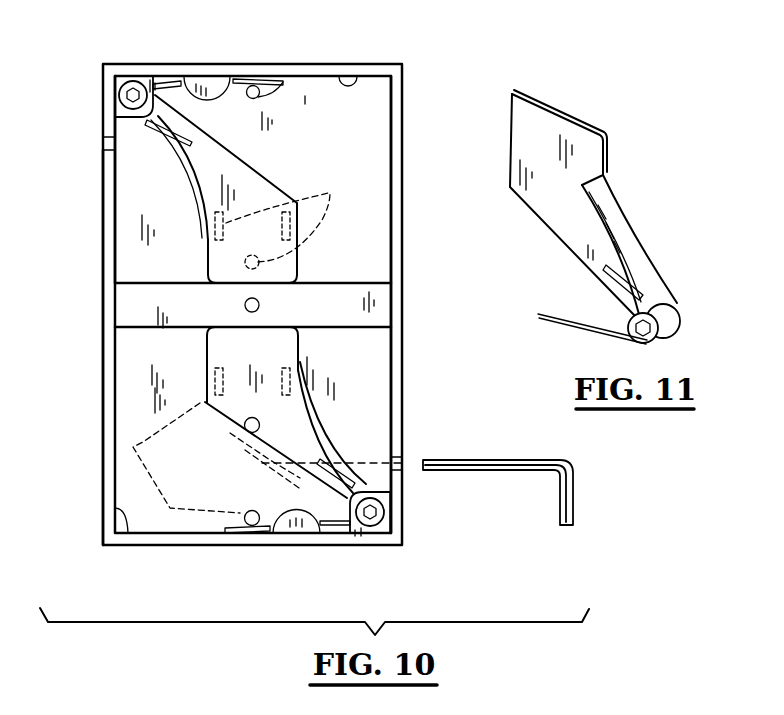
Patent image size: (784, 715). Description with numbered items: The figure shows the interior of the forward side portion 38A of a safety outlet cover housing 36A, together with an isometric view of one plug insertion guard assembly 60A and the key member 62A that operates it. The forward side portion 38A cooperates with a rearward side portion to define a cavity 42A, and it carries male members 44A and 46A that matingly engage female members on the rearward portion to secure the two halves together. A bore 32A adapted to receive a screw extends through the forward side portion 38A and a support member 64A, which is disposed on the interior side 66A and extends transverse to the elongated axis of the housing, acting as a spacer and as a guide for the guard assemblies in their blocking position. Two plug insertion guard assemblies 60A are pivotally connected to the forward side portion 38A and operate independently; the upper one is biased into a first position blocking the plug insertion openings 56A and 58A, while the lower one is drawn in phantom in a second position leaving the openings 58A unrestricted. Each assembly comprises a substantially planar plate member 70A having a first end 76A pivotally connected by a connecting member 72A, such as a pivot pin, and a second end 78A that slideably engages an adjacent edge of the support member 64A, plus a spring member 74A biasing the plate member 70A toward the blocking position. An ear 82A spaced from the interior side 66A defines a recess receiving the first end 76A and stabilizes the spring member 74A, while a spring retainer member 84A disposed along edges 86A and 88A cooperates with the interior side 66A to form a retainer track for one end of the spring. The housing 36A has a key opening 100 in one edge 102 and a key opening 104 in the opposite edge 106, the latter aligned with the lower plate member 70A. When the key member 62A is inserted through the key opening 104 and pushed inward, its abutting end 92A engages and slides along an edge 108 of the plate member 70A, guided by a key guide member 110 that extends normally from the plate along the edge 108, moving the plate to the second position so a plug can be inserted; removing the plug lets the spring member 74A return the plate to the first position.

In FIG. 10, the bore 32A is at (259, 305).
In FIG. 10, the housing 36A is at (425, 57).
In FIG. 10, the forward side portion 38A is at (405, 106).
In FIG. 10, the cavity 42A is at (128, 131).
In FIG. 10, the male member 44A is at (262, 93).
In FIG. 10, the male member 46A is at (253, 528).
In FIG. 10, the plug insertion opening 56A is at (326, 199).
In FIG. 10, the plug insertion opening 58A is at (252, 418).
In FIG. 10, the plug insertion guard assembly 60A is at (207, 336).
In FIG. 11, the plug insertion guard assembly 60A is at (565, 192).
In FIG. 10, the key member 62A is at (510, 456).
In FIG. 10, the support member 64A is at (402, 370).
In FIG. 10, the interior side 66A is at (346, 250).
In FIG. 10, the plate member 70A is at (268, 180).
In FIG. 11, the plate member 70A is at (552, 210).
In FIG. 10, the connecting member 72A is at (137, 88).
In FIG. 11, the connecting member 72A is at (654, 323).
In FIG. 10, the spring member 74A is at (172, 83).
In FIG. 11, the spring member 74A is at (566, 321).
In FIG. 10, the first end 76A is at (178, 122).
In FIG. 11, the first end 76A is at (612, 283).
In FIG. 10, the second end 78A is at (218, 264).
In FIG. 11, the second end 78A is at (517, 150).
In FIG. 10, the ear 82A is at (122, 77).
In FIG. 10, the spring retainer member 84A is at (215, 86).
In FIG. 10, the edge 86A is at (355, 88).
In FIG. 10, the edge 88A is at (114, 512).
In FIG. 10, the abutting end 92A is at (457, 471).
In FIG. 10, the key opening 100 is at (103, 143).
In FIG. 10, the edge 102 is at (103, 188).
In FIG. 10, the key opening 104 is at (401, 450).
In FIG. 10, the edge 106 is at (402, 419).
In FIG. 10, the edge 108 is at (207, 242).
In FIG. 11, the edge 108 is at (589, 165).
In FIG. 10, the key guide member 110 is at (182, 163).
In FIG. 11, the key guide member 110 is at (618, 237).